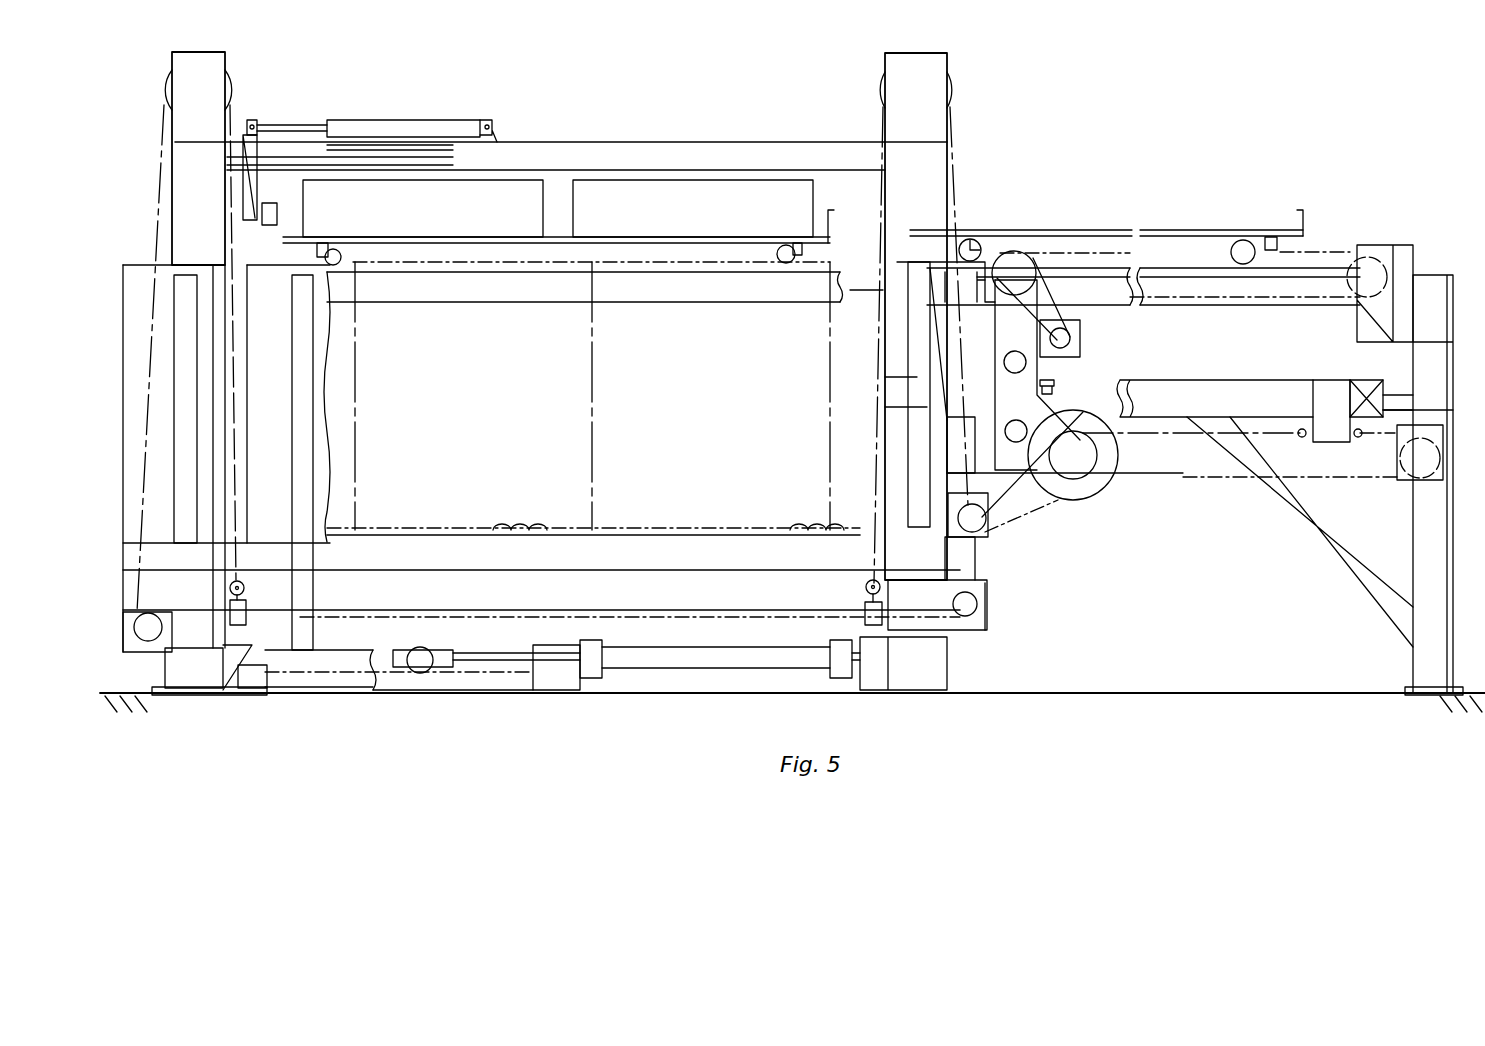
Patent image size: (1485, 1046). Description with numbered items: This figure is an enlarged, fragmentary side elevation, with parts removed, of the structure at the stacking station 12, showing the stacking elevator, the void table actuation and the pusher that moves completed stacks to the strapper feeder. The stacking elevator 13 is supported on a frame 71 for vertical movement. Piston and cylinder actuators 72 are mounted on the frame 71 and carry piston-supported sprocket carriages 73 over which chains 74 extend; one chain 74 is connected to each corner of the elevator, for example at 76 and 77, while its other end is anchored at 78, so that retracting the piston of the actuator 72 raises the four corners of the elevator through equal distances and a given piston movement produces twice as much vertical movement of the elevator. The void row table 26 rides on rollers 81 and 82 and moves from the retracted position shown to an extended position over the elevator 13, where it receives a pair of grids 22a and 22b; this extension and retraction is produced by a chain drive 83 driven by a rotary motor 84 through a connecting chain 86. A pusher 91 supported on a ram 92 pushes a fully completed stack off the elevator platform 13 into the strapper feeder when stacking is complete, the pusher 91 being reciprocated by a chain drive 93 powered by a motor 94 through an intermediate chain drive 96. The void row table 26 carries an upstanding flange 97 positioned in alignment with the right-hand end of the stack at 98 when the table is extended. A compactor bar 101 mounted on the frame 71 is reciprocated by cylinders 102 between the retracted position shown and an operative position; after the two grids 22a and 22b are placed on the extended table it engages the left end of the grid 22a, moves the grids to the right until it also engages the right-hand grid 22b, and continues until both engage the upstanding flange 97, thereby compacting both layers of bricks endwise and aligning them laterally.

The stacking station 12 is at (631, 123).
The stacking elevator 13 is at (675, 560).
The grid 22a is at (495, 193).
The grid 22b is at (775, 177).
The void row table 26 is at (565, 237).
The frame 71 is at (940, 178).
The piston and cylinder actuator 72 is at (670, 648).
The sprocket carriage 73 is at (440, 650).
The chain 74 is at (380, 655).
The chain connection 76 is at (246, 610).
The chain connection 77 is at (865, 605).
The chain anchor 78 is at (270, 690).
The roller 81 is at (982, 245).
The roller 82 is at (1243, 240).
The chain drive 83 is at (1099, 293).
The rotary motor 84 is at (1080, 340).
The connecting chain 86 is at (1025, 308).
The pusher 91 is at (918, 428).
The ram 92 is at (1253, 380).
The chain drive 93 is at (1197, 480).
The motor 94 is at (990, 530).
The intermediate chain drive 96 is at (1030, 513).
The upstanding flange 97 is at (833, 222).
The stack 98 is at (803, 414).
The compactor bar 101 is at (268, 203).
The cylinder 102 is at (398, 120).